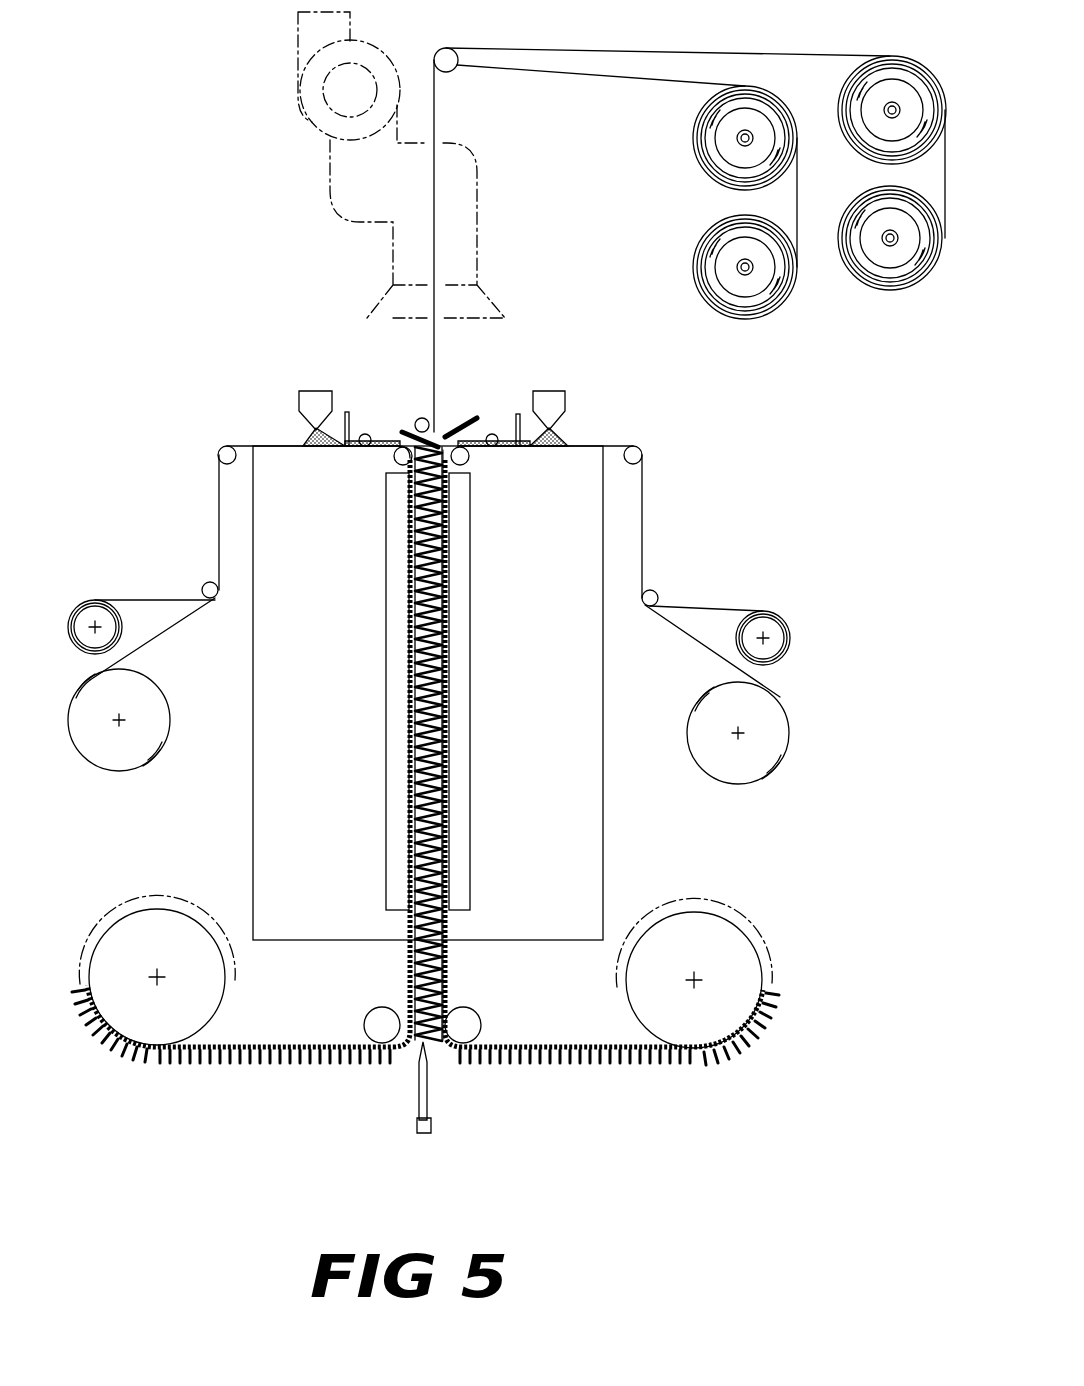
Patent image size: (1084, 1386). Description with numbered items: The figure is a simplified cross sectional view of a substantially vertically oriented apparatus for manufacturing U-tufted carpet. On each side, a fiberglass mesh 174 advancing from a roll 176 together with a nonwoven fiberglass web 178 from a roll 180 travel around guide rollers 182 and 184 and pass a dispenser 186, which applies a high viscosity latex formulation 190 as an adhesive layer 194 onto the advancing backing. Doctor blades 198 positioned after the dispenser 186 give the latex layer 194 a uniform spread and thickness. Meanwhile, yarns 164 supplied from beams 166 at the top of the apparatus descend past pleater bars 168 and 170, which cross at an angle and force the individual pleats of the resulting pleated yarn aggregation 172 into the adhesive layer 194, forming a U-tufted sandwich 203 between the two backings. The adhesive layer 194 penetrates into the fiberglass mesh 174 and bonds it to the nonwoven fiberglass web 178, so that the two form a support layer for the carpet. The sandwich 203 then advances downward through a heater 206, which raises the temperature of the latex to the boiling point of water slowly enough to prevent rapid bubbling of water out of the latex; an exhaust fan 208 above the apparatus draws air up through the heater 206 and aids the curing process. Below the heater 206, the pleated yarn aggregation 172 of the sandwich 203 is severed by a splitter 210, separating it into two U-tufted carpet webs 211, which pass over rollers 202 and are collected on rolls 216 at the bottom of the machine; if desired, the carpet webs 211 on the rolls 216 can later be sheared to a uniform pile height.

The yarns 164 is at (648, 52).
The beams 166 is at (890, 58).
The pleater bar 168 is at (417, 430).
The pleater bar 170 is at (447, 422).
The pleated yarn aggregation 172 is at (412, 528).
The fiberglass mesh 174 is at (135, 598).
The roll 176 is at (100, 607).
The nonwoven fiberglass web 178 is at (170, 628).
The roll 180 is at (150, 730).
The guide roller 182 is at (207, 588).
The guide roller 184 is at (222, 453).
The dispenser 186 is at (313, 398).
The high viscosity latex formulation 190 is at (307, 437).
The adhesive layer 194 is at (362, 440).
The doctor blades 198 is at (352, 418).
The forming roller 202 is at (398, 458).
The U-tufted sandwich 203 is at (445, 580).
The heater 206 is at (390, 732).
The exhaust fan 208 is at (307, 110).
The splitter 210 is at (415, 1105).
The U-tufted carpet webs 211 is at (342, 1045).
The rolls 216 is at (150, 927).